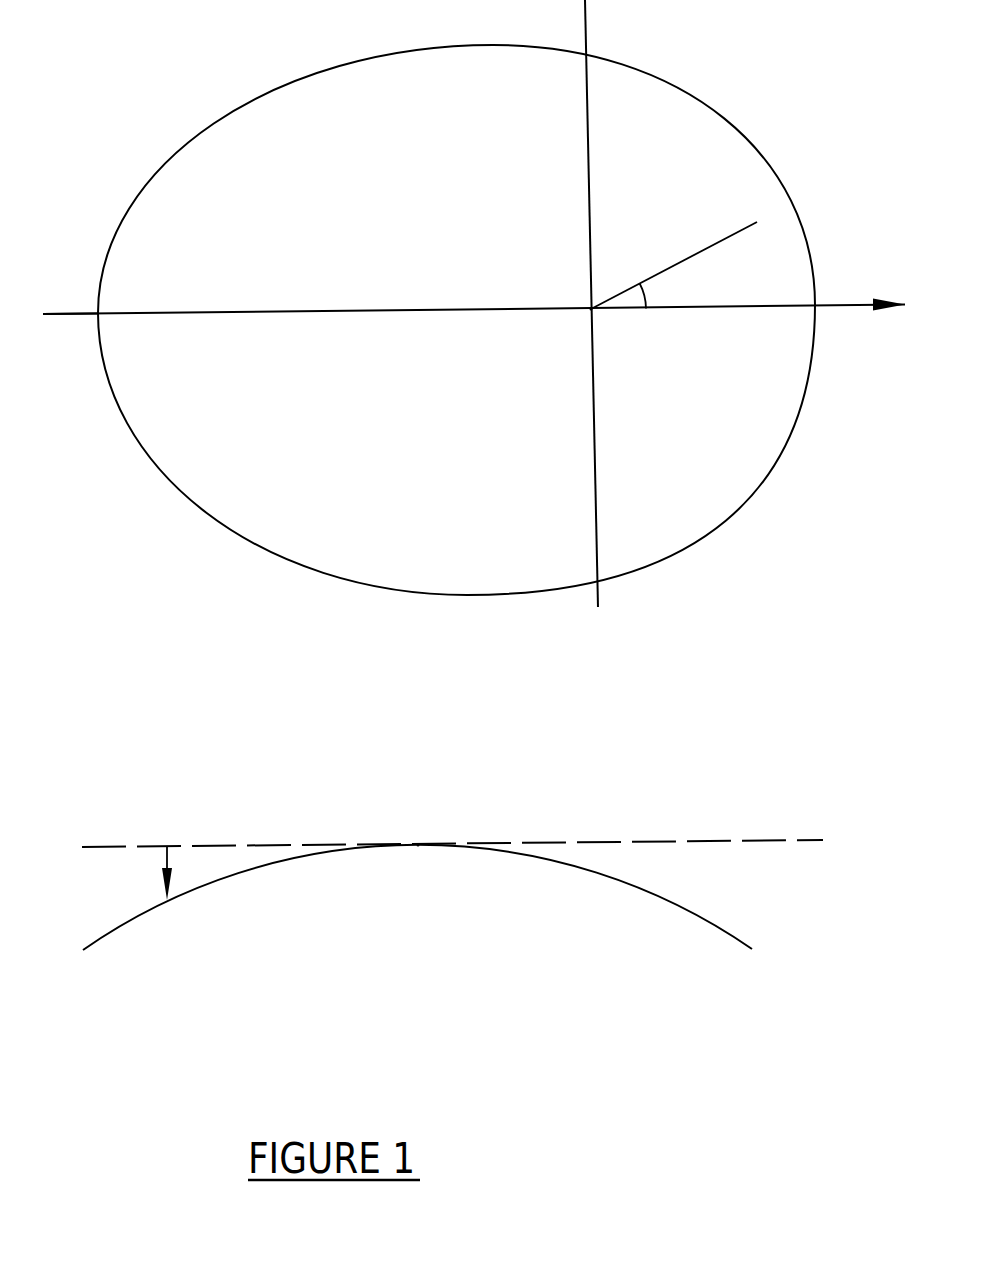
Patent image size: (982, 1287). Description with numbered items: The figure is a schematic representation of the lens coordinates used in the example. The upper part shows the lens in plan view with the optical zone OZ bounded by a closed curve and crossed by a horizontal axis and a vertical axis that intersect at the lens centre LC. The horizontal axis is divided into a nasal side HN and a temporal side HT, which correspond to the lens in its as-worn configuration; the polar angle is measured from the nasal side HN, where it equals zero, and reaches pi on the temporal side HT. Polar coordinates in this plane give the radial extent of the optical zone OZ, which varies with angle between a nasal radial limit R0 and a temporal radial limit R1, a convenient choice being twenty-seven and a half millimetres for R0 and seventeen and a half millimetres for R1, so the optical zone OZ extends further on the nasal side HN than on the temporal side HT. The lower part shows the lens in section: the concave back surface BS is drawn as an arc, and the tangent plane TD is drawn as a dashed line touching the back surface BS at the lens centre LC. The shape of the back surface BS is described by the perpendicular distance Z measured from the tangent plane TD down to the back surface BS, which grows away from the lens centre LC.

The optical zone OZ is at (456, 320).
The temporal side of the horizontal axis HT is at (317, 275).
The nasal side of the horizontal axis HN is at (697, 265).
The temporal radial limit of the optical zone R1 is at (70, 342).
The nasal radial limit of the optical zone R0 is at (748, 331).
The lens centre LC is at (562, 330).
The tangent plane TD is at (587, 815).
The back surface BS is at (447, 905).
The perpendicular distance from the tangent plane Z is at (148, 875).